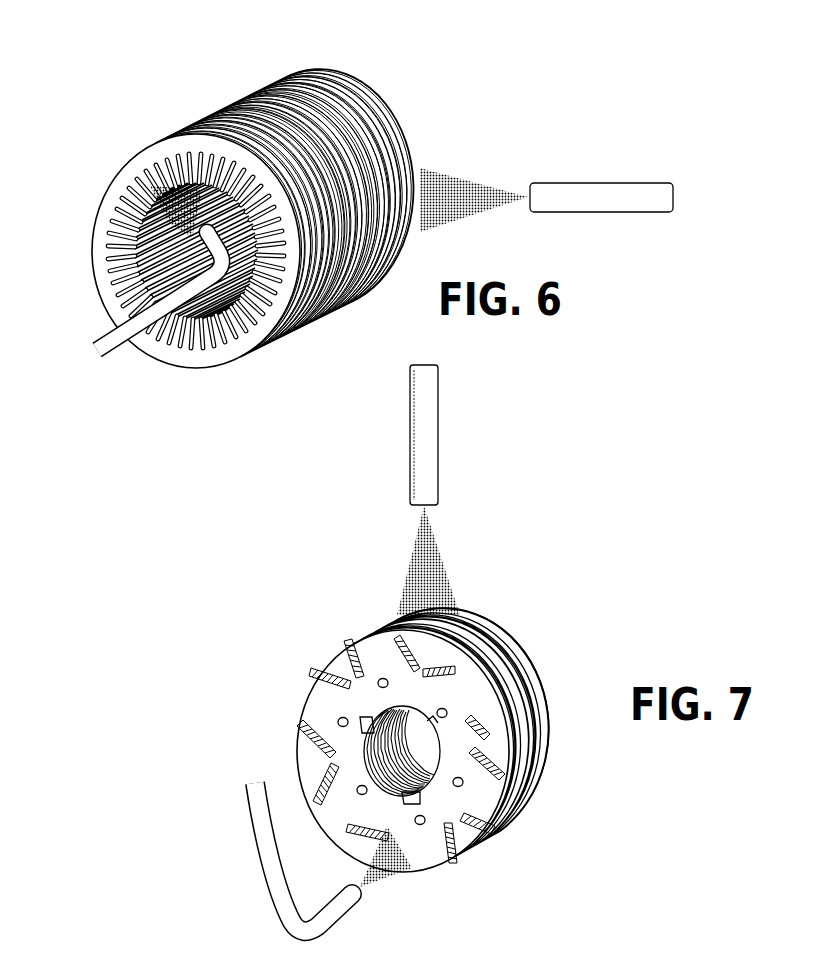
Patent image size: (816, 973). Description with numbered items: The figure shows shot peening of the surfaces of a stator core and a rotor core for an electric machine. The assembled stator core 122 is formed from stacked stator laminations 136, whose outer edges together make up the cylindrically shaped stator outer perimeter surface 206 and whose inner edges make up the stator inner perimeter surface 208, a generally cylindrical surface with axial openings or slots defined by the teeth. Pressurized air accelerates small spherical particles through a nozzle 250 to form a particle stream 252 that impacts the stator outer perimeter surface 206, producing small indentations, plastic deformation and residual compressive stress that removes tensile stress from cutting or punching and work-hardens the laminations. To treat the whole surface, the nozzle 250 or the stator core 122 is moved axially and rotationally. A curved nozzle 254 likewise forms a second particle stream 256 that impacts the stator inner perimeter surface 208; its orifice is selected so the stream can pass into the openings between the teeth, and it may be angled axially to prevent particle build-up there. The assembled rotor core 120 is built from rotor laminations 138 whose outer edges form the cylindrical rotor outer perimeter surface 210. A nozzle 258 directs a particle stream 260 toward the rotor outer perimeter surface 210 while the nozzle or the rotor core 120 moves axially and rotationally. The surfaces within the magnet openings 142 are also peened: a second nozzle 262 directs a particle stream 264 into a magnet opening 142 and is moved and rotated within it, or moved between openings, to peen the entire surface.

In FIG. 6, the stator core 122 is at (260, 194).
In FIG. 6, the stator outer perimeter surface 206 is at (287, 105).
In FIG. 6, the stator laminations 136 is at (405, 150).
In FIG. 6, the stator inner perimeter surface 208 is at (130, 297).
In FIG. 6, the second particle stream 256 is at (133, 180).
In FIG. 6, the curved nozzle 254 is at (118, 357).
In FIG. 6, the particle stream 252 is at (455, 183).
In FIG. 6, the nozzle 250 is at (610, 183).
In FIG. 7, the rotor core 120 is at (486, 752).
In FIG. 7, the rotor outer perimeter surface 210 is at (518, 627).
In FIG. 7, the rotor laminations 138 is at (535, 737).
In FIG. 7, the magnet openings 142 is at (482, 723).
In FIG. 7, the nozzle 258 is at (440, 435).
In FIG. 7, the particle stream 260 is at (425, 552).
In FIG. 7, the second nozzle 262 is at (262, 865).
In FIG. 7, the particle stream 264 is at (380, 880).